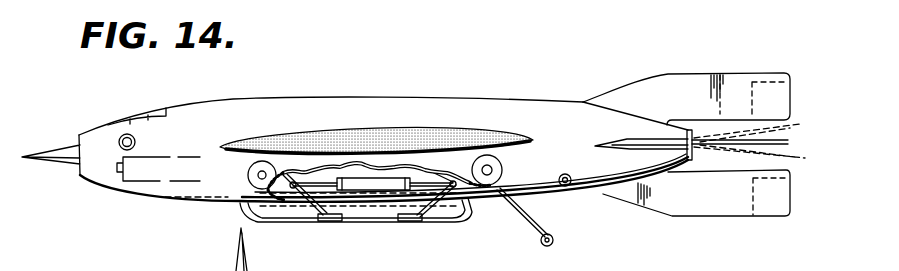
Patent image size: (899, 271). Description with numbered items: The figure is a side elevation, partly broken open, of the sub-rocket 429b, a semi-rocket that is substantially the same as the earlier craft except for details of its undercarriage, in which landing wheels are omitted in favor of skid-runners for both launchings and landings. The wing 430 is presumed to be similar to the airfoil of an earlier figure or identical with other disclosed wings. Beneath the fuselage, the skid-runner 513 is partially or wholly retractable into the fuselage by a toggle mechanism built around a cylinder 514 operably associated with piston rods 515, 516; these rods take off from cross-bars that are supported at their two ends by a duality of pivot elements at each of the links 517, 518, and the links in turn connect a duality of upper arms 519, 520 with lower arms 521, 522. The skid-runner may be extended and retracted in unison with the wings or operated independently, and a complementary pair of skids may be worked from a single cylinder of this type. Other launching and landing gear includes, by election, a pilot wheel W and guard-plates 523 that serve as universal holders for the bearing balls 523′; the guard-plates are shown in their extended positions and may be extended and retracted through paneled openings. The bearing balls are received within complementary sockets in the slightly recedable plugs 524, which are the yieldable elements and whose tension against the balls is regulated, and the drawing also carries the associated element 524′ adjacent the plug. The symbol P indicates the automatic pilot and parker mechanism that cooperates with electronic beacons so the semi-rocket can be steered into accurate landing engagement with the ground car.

The sub-rocket 429b is at (233, 97).
The wing 430 is at (262, 142).
The skid-runner 513 is at (463, 215).
The cylinder 514 is at (380, 189).
The piston rod 515 is at (327, 189).
The piston rod 516 is at (402, 219).
The link 517 is at (465, 150).
The link 518 is at (302, 169).
The upper arm 519 is at (299, 170).
The upper arm 520 is at (420, 169).
The lower arm 521 is at (306, 216).
The lower arm 522 is at (410, 206).
The guard-plate 523 is at (249, 171).
The bearing ball 523′ is at (258, 180).
The recedable plug 524 is at (501, 166).
The roller shaft 524′ is at (488, 166).
The automatic pilot and parker mechanism P is at (136, 140).
The pilot wheel W is at (554, 240).